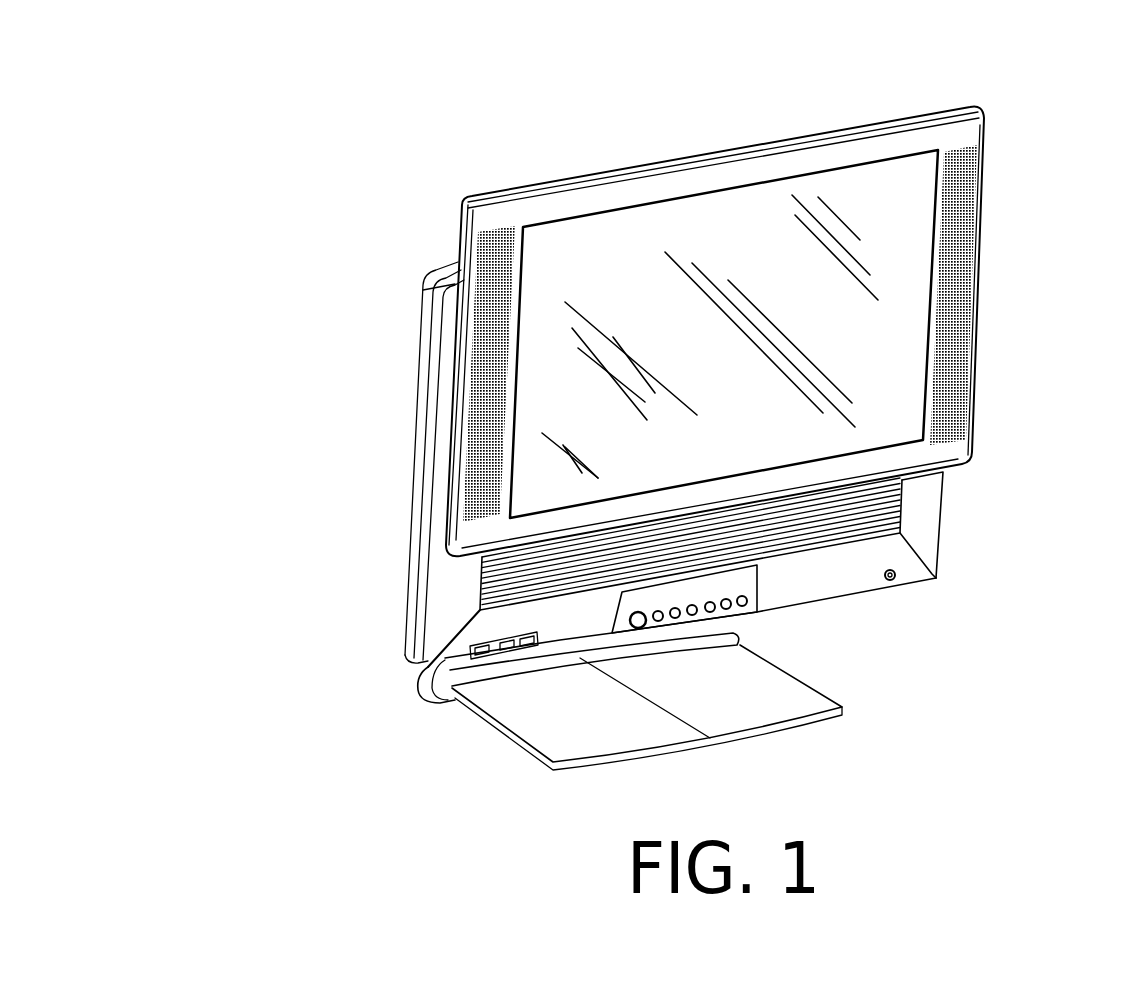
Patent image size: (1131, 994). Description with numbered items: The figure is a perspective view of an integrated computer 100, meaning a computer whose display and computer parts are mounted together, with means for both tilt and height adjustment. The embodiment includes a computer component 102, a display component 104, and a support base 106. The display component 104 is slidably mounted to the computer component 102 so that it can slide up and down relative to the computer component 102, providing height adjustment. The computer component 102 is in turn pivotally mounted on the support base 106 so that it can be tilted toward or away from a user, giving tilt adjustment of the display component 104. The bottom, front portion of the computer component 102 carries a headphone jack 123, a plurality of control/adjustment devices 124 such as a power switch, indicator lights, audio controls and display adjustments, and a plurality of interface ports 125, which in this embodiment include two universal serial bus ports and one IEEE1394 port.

The integrated computer 100 is at (651, 405).
The computer component 102 is at (746, 569).
The display component 104 is at (990, 115).
The support base 106 is at (820, 705).
The headphone jack 123 is at (898, 570).
The control/adjustment devices 124 is at (710, 592).
The interface ports 125 is at (430, 700).